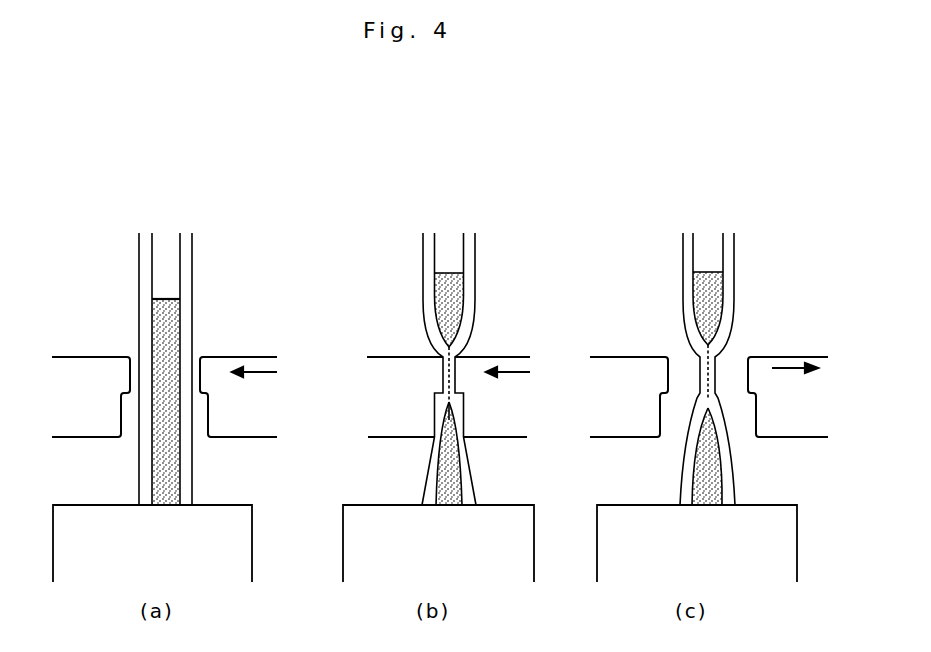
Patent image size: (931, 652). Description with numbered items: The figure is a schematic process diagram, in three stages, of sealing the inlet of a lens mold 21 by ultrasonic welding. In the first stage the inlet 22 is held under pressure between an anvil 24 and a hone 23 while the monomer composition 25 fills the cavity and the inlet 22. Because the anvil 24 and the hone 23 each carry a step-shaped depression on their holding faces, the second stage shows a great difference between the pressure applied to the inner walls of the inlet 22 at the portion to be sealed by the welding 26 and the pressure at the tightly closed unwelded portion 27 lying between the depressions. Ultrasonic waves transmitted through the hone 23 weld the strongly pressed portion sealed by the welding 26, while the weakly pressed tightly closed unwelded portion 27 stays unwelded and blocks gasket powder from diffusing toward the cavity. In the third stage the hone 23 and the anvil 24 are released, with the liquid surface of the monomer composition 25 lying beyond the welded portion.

The mold 21 is at (223, 526).
The inlet 22 is at (187, 253).
The hone 23 is at (220, 360).
The anvil 24 is at (108, 420).
The monomer composition 25 is at (177, 470).
The portion sealed by the welding 26 is at (450, 367).
The tightly closed unwelded portion 27 is at (448, 418).